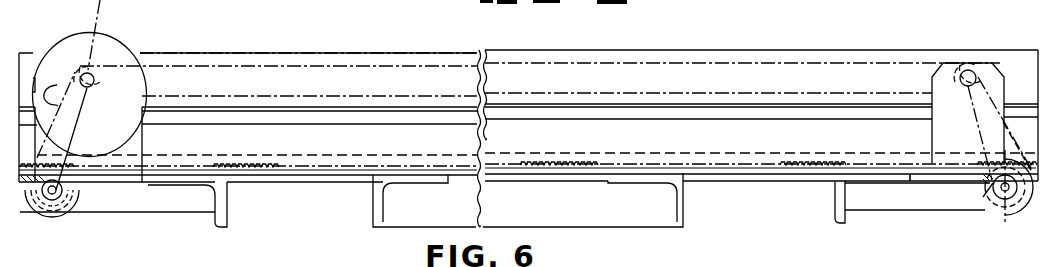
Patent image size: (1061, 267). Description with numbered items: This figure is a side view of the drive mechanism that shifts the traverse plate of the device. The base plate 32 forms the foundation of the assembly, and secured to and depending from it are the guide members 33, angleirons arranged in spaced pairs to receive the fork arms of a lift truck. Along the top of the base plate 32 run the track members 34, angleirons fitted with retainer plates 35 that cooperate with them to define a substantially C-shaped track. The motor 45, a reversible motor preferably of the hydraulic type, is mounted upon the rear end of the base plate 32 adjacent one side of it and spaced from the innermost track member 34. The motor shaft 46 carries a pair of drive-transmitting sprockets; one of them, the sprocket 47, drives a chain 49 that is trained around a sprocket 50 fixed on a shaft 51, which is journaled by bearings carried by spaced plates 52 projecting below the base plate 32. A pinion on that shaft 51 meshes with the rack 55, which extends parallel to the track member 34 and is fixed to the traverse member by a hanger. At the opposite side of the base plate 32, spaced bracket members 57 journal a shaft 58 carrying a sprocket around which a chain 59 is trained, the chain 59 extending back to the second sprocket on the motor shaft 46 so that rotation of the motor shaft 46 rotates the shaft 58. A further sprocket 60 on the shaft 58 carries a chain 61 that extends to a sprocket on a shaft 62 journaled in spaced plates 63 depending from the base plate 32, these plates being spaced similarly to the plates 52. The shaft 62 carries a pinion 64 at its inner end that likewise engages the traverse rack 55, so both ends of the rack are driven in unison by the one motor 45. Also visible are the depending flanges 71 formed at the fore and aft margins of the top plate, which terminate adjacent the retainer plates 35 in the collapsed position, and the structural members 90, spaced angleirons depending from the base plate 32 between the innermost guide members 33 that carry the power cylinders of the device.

The base plate 32 is at (742, 182).
The guide member 33 is at (221, 206).
The track member 34 is at (668, 133).
The retainer plate 35 is at (625, 112).
The motor 45 is at (120, 47).
The motor shaft 46 is at (80, 72).
The sprocket 47 is at (74, 79).
The chain 49 is at (50, 87).
The sprocket 50 is at (40, 207).
The shaft 51 is at (55, 200).
The plate 52 is at (173, 207).
The rack 55 is at (803, 184).
The bracket member 57 is at (943, 75).
The shaft 58 is at (977, 63).
The chain 59 is at (858, 62).
The sprocket 60 is at (982, 78).
The chain 61 is at (962, 108).
The shaft 62 is at (1005, 200).
The plate 63 is at (920, 200).
The pinion 64 is at (983, 197).
The depending flange 71 is at (223, 58).
The structural member 90 is at (657, 216).